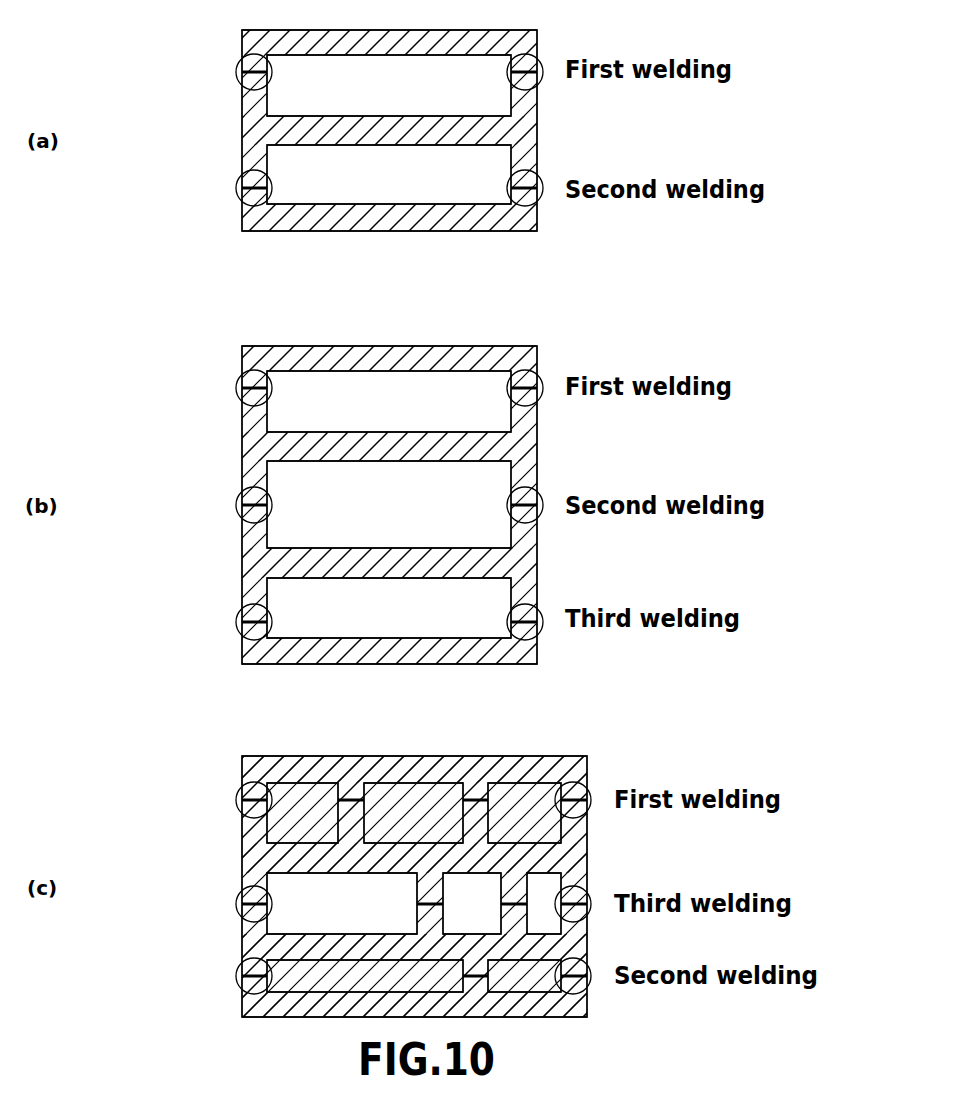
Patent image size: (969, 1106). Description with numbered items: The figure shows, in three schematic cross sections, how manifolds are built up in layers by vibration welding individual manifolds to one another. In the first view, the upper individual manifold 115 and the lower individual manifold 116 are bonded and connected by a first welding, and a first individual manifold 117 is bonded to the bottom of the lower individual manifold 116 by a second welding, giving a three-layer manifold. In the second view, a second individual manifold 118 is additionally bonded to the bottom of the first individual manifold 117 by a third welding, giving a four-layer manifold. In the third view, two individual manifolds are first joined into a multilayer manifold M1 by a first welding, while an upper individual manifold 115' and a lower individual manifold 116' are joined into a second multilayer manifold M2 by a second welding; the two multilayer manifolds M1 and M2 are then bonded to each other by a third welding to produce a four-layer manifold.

The upper individual manifold 115 is at (357, 408).
The lower individual manifold 116 is at (357, 494).
The first individual manifold 117 is at (242, 212).
The second individual manifold 118 is at (242, 642).
The upper individual manifold 115' is at (353, 943).
The lower individual manifold 116' is at (353, 999).
The multilayer manifold M1 is at (124, 769).
The multilayer manifold M2 is at (115, 935).